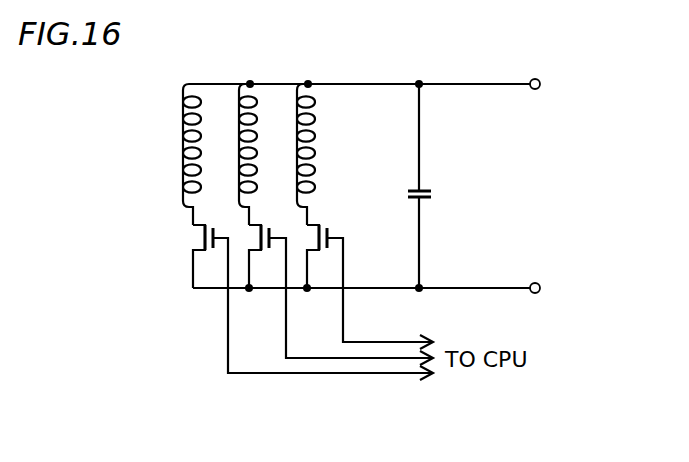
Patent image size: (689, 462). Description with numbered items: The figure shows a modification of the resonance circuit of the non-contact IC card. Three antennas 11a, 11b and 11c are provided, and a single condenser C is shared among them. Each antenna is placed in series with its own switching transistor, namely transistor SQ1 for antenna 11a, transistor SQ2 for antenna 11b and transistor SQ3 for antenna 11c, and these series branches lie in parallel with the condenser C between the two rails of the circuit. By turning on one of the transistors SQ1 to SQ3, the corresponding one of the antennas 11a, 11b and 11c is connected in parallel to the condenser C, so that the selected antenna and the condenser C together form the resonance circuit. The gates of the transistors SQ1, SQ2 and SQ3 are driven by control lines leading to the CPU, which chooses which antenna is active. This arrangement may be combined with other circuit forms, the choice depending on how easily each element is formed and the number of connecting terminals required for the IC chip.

The antenna 11a is at (178, 128).
The antenna 11b is at (238, 128).
The antenna 11c is at (317, 122).
The transistor SQ1 is at (190, 238).
The transistor SQ2 is at (253, 237).
The transistor SQ3 is at (329, 233).
The condenser C is at (436, 196).